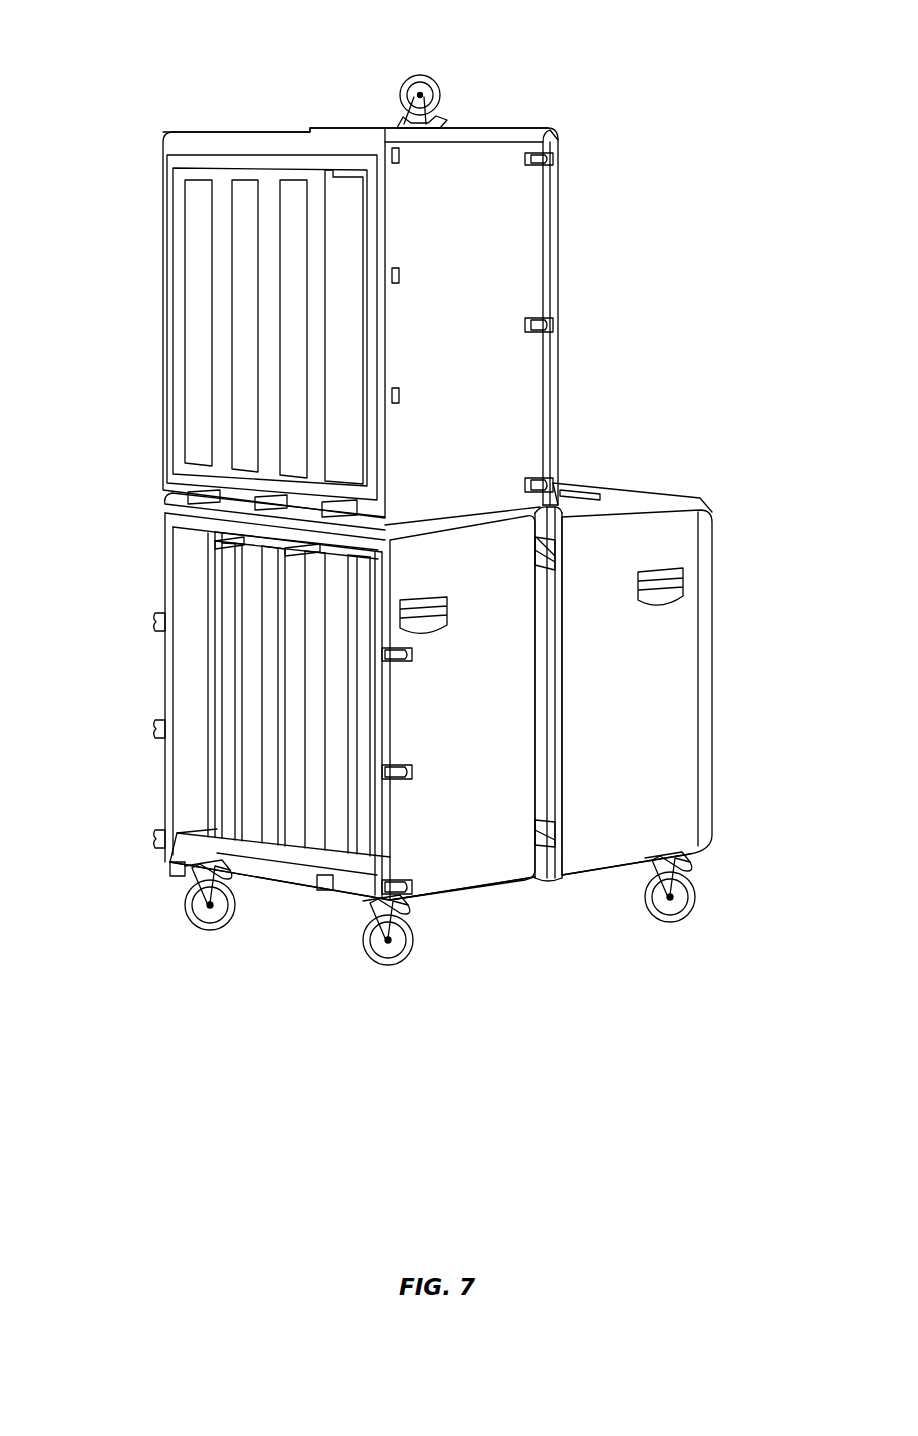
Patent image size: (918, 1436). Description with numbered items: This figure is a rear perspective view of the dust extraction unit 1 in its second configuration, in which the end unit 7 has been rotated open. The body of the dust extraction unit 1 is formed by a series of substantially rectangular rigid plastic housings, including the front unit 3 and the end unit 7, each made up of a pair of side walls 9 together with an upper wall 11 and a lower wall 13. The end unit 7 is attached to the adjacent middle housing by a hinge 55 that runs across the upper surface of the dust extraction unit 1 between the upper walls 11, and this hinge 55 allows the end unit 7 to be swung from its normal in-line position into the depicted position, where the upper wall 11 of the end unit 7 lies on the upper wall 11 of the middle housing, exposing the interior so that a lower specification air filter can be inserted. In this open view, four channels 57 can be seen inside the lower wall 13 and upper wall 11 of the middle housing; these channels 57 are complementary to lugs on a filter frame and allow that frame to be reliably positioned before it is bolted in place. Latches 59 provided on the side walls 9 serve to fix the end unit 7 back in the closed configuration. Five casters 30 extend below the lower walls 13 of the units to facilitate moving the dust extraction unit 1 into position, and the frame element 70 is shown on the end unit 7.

The dust extraction unit 1 is at (652, 92).
The front unit 3 is at (712, 715).
The end unit 7 is at (533, 283).
The side wall 9 is at (480, 152).
The upper wall 11 is at (633, 500).
The lower wall 13 is at (237, 132).
The caster 30 is at (422, 80).
The hinge 55 is at (165, 495).
The channel 57 is at (166, 521).
The latch 59 is at (158, 620).
The door frame 70 is at (560, 197).